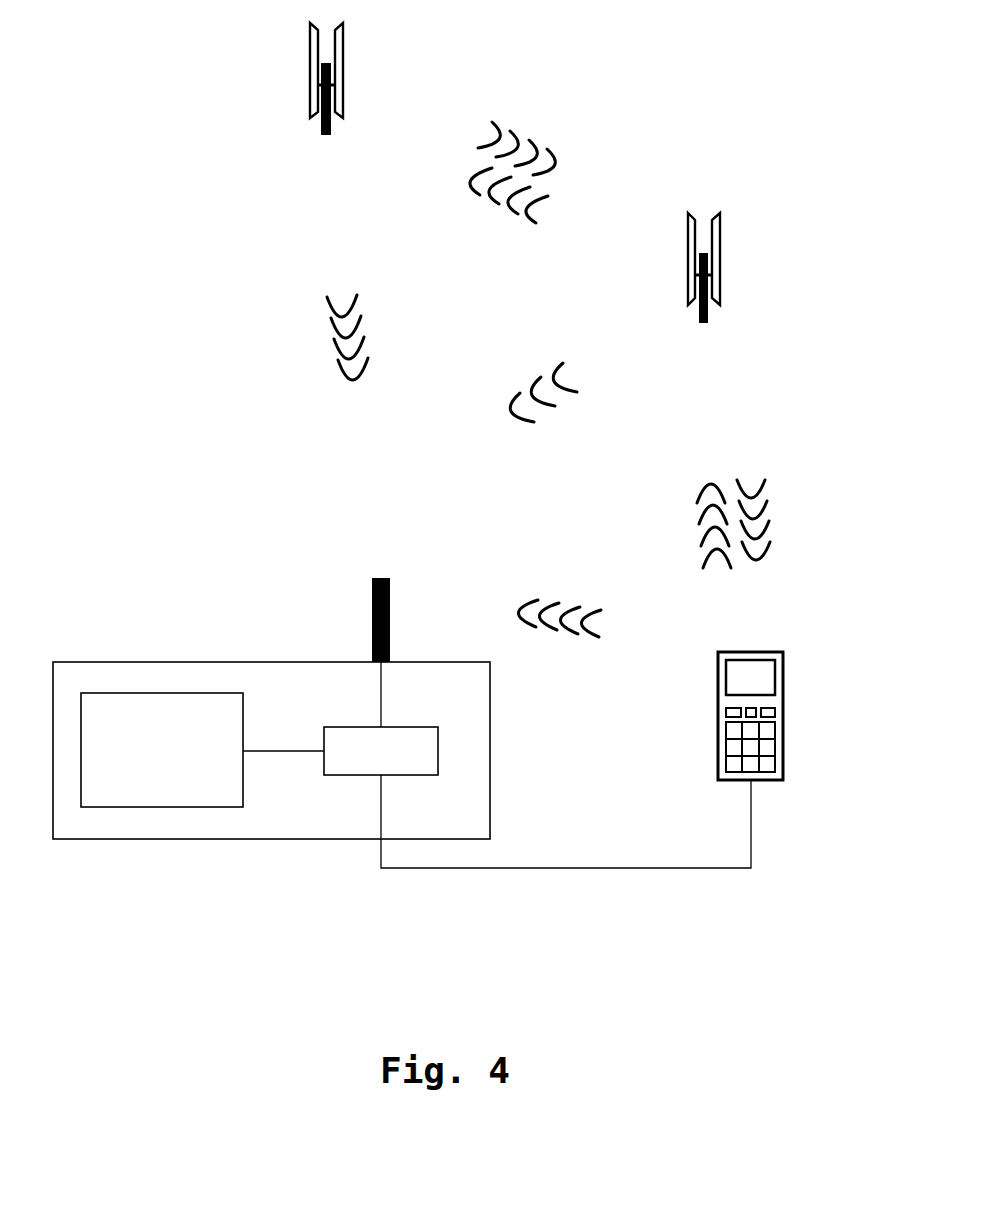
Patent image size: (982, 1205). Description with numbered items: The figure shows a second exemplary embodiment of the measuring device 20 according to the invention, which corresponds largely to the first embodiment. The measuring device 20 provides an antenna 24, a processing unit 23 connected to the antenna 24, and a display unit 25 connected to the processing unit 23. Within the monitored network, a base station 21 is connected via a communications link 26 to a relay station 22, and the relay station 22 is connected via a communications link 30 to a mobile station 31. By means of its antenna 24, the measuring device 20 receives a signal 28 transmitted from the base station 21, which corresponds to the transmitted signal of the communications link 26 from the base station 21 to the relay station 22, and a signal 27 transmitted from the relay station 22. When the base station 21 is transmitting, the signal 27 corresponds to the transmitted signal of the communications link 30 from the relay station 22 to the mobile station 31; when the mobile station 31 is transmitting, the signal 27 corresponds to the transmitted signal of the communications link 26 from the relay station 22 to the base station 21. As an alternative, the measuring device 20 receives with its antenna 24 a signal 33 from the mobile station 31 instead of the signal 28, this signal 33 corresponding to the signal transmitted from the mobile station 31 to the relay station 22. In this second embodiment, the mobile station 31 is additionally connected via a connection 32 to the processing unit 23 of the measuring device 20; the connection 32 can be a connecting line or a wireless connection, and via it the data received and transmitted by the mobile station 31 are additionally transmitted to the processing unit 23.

The measuring device 20 is at (135, 662).
The base station 21 is at (310, 62).
The relay station 22 is at (720, 237).
The processing unit 23 is at (340, 775).
The antenna 24 is at (350, 580).
The display unit 25 is at (130, 807).
The communications link 26 is at (537, 138).
The signal 27 is at (562, 435).
The signal 28 is at (328, 332).
The communications link 30 is at (797, 565).
The mobile station 31 is at (783, 724).
The connection 32 is at (697, 868).
The signal 33 is at (577, 673).